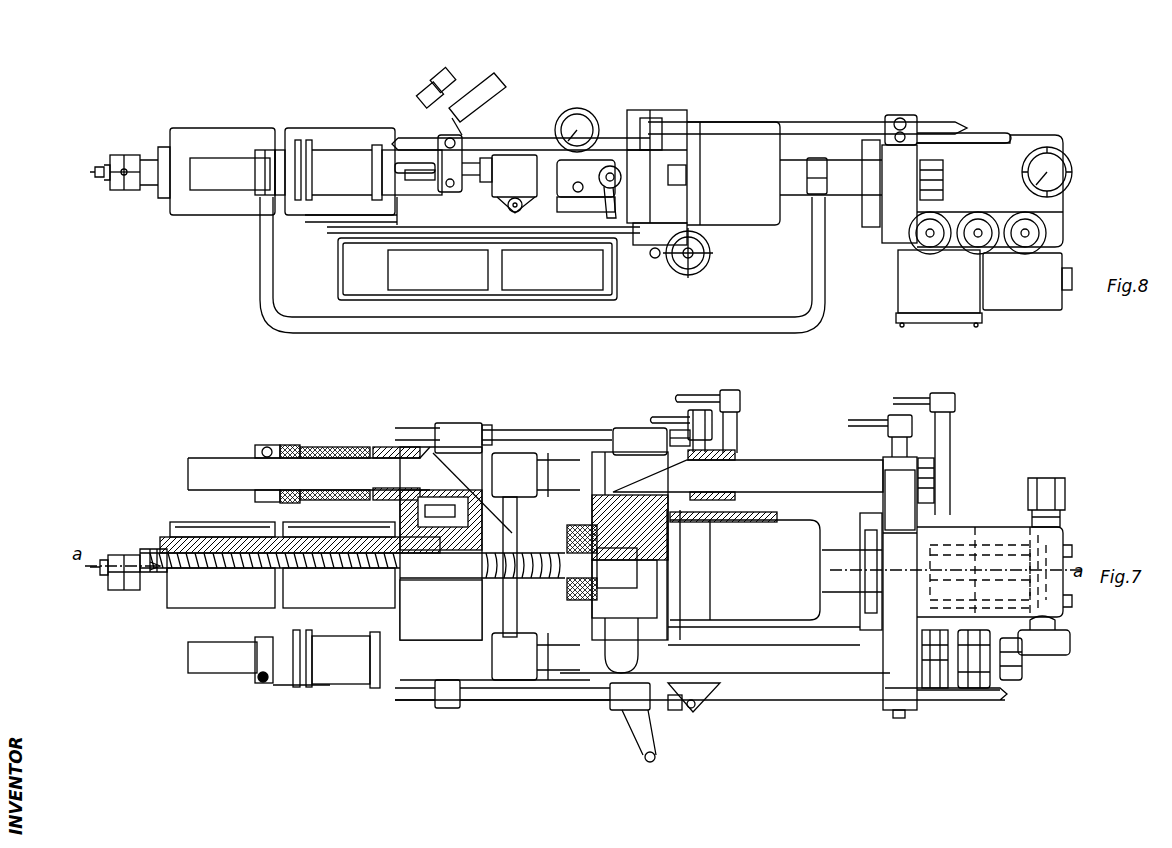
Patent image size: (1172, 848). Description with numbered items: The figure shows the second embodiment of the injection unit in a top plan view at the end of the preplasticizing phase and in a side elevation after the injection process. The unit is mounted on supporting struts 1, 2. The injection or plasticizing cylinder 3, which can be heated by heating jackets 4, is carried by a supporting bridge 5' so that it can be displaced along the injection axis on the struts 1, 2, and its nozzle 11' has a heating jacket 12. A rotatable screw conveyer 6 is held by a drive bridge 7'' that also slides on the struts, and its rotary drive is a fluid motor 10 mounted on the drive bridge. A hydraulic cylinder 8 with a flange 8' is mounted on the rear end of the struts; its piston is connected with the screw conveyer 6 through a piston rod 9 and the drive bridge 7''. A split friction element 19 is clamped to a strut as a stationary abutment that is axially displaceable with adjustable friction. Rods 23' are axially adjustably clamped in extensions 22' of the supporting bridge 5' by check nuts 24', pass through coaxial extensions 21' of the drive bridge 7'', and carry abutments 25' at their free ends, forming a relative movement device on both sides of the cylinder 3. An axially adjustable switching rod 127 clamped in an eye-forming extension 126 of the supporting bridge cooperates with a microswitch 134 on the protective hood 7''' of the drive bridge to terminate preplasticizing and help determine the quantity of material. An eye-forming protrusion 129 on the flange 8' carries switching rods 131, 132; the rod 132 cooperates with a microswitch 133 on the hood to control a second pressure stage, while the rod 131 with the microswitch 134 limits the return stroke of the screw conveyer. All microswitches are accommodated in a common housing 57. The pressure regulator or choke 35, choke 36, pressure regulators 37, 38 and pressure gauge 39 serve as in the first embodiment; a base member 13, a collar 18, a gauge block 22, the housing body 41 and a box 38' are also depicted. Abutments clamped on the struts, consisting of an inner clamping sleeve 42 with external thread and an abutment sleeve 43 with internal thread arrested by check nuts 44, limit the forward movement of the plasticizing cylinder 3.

In FIG. 7, the supporting strut 1 is at (222, 467).
In FIG. 8, the supporting strut 2 is at (225, 185).
In FIG. 7, the supporting strut 2 is at (220, 665).
In FIG. 7, the injection cylinder 3 is at (227, 550).
In FIG. 8, the heating jacket 4 is at (320, 140).
In FIG. 7, the heating jacket 4 is at (317, 592).
In FIG. 8, the supporting bridge 5' is at (395, 134).
In FIG. 7, the supporting bridge 5' is at (381, 694).
In FIG. 7, the screw conveyer 6 is at (528, 553).
In FIG. 8, the drive bridge 7'' is at (586, 283).
In FIG. 7, the drive bridge 7'' is at (630, 511).
In FIG. 8, the protective hood 7''' is at (784, 245).
In FIG. 7, the protective hood 7''' is at (763, 633).
In FIG. 8, the hydraulic cylinder 8 is at (994, 189).
In FIG. 7, the hydraulic cylinder 8 is at (994, 519).
In FIG. 8, the flange 8' is at (883, 257).
In FIG. 7, the flange 8' is at (945, 533).
In FIG. 8, the piston rod 9 is at (850, 195).
In FIG. 7, the piston rod 9 is at (851, 595).
In FIG. 7, the fluid motor 10 is at (752, 537).
In FIG. 8, the nozzle 11' is at (104, 124).
In FIG. 7, the nozzle 11' is at (79, 567).
In FIG. 8, the heating jacket 12 is at (127, 160).
In FIG. 7, the heating jacket 12 is at (125, 578).
In FIG. 7, the base plate 13 is at (787, 690).
In FIG. 8, the collar 18 is at (816, 165).
In FIG. 8, the friction element 19 is at (515, 158).
In FIG. 7, the friction element 19 is at (510, 460).
In FIG. 7, the extension of drive bridge 21' is at (652, 555).
In FIG. 8, the gauge block 22 is at (588, 143).
In FIG. 7, the extension of supporting bridge 22' is at (461, 552).
In FIG. 8, the rod 23' is at (407, 269).
In FIG. 7, the rod 23' is at (371, 552).
In FIG. 7, the check nut 24' is at (532, 552).
In FIG. 8, the abutment 25' is at (661, 267).
In FIG. 7, the abutment 25' is at (697, 552).
In FIG. 7, the pressure regulator 35 is at (1043, 478).
In FIG. 7, the choke 36 is at (1020, 670).
In FIG. 7, the pressure regulator 37 is at (1003, 700).
In FIG. 7, the pressure regulator 38 is at (963, 693).
In FIG. 8, the valve box 38' is at (939, 309).
In FIG. 8, the pressure gauge 39 is at (1053, 185).
In FIG. 7, the pressure gauge 39 is at (1062, 638).
In FIG. 7, the body 41 is at (397, 435).
In FIG. 7, the clamping sleeve 42 is at (265, 450).
In FIG. 7, the abutment sleeve 43 is at (325, 448).
In FIG. 7, the check nut 44 is at (290, 445).
In FIG. 8, the common housing 57 is at (633, 112).
In FIG. 8, the eye-forming extension 126 is at (440, 147).
In FIG. 8, the switching rod 127 is at (530, 143).
In FIG. 7, the switching rod 127 is at (572, 697).
In FIG. 8, the eye-forming protrusion 129 is at (893, 115).
In FIG. 7, the eye-forming protrusion 129 is at (888, 692).
In FIG. 8, the switching rod 131 is at (930, 120).
In FIG. 7, the switching rod 131 is at (933, 702).
In FIG. 8, the switching rod 132 is at (986, 133).
In FIG. 8, the microswitch 133 is at (649, 130).
In FIG. 8, the microswitch 134 is at (680, 112).
In FIG. 7, the microswitch 134 is at (700, 695).